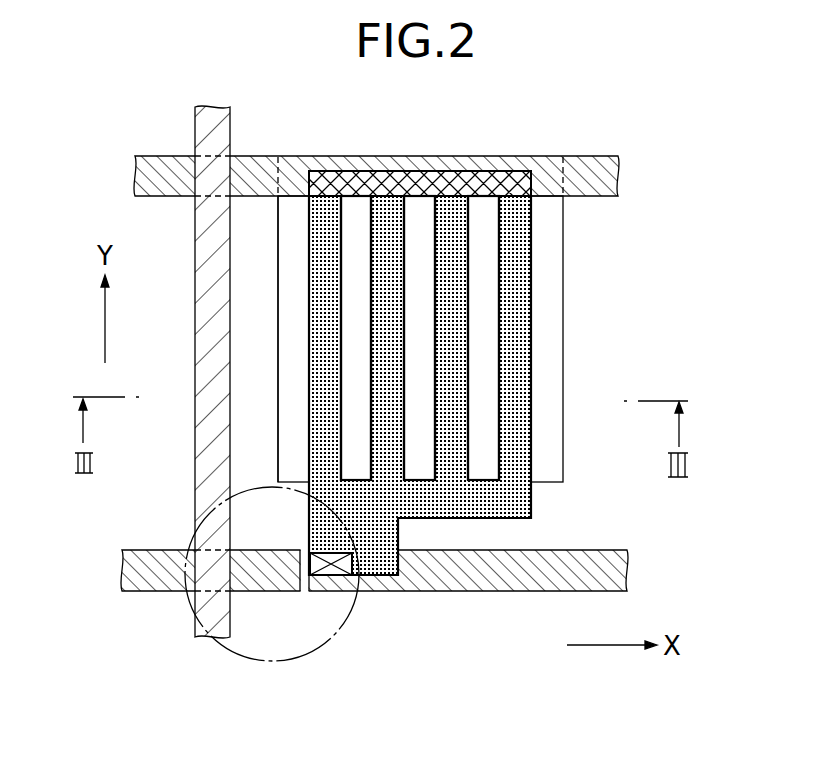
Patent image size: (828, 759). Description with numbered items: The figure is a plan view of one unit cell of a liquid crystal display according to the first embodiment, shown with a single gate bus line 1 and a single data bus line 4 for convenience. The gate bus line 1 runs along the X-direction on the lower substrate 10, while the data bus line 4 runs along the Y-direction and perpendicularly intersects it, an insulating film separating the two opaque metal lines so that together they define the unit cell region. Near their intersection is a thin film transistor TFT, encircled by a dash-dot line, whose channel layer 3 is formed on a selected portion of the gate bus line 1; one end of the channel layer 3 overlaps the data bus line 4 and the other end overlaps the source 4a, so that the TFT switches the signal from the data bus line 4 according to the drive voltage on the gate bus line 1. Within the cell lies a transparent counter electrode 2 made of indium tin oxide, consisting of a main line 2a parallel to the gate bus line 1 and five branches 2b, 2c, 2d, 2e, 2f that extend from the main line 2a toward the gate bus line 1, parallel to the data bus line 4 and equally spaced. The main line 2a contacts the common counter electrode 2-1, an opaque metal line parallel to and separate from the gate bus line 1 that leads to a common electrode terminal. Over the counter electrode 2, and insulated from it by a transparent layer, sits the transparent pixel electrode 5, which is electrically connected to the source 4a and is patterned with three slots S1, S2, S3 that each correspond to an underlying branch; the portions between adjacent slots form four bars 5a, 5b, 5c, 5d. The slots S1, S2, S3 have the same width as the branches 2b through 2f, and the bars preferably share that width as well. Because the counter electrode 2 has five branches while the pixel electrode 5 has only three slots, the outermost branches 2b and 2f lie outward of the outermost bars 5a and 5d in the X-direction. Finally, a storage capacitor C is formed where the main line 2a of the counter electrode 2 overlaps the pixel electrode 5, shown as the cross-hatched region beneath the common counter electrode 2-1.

The gate bus line 1 is at (625, 567).
The counter electrode 2 is at (565, 281).
The common counter electrode 2-1 is at (618, 180).
The main line 2a is at (557, 181).
The branch 2b is at (285, 293).
The branch 2c is at (357, 328).
The branch 2d is at (400, 378).
The branch 2e is at (485, 328).
The branch 2f is at (553, 357).
The channel layer 3 is at (262, 577).
The data bus line 4 is at (205, 437).
The source 4a is at (332, 585).
The pixel electrode 5 is at (536, 505).
The bar 5a is at (313, 460).
The bar 5b is at (397, 453).
The bar 5c is at (463, 453).
The bar 5d is at (520, 440).
The lower substrate 10 is at (495, 655).
The storage capacitor C is at (328, 187).
The slot S1 is at (353, 212).
The slot S2 is at (420, 210).
The slot S3 is at (485, 210).
The thin film transistor TFT is at (217, 636).